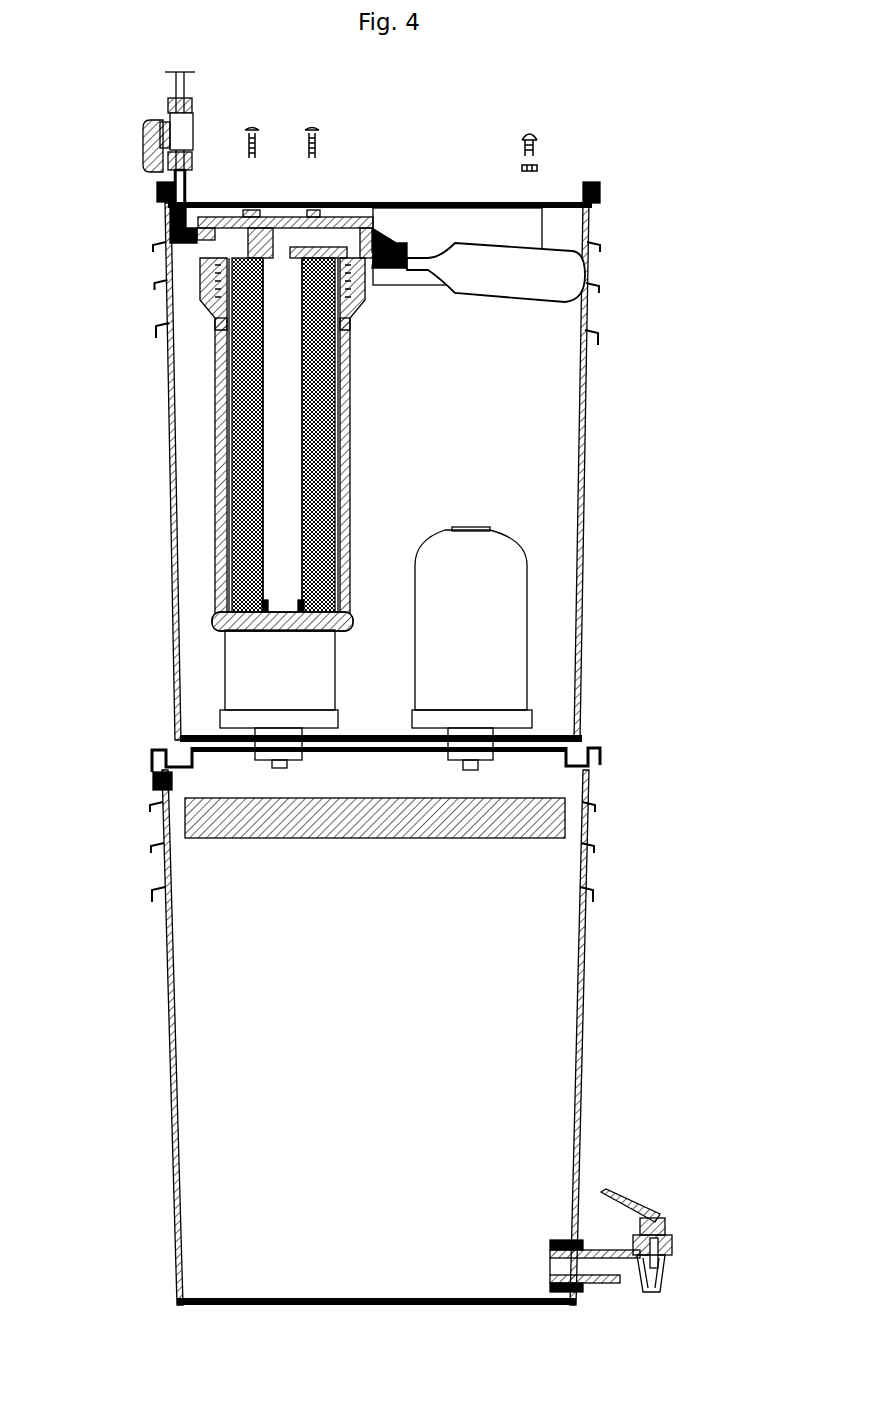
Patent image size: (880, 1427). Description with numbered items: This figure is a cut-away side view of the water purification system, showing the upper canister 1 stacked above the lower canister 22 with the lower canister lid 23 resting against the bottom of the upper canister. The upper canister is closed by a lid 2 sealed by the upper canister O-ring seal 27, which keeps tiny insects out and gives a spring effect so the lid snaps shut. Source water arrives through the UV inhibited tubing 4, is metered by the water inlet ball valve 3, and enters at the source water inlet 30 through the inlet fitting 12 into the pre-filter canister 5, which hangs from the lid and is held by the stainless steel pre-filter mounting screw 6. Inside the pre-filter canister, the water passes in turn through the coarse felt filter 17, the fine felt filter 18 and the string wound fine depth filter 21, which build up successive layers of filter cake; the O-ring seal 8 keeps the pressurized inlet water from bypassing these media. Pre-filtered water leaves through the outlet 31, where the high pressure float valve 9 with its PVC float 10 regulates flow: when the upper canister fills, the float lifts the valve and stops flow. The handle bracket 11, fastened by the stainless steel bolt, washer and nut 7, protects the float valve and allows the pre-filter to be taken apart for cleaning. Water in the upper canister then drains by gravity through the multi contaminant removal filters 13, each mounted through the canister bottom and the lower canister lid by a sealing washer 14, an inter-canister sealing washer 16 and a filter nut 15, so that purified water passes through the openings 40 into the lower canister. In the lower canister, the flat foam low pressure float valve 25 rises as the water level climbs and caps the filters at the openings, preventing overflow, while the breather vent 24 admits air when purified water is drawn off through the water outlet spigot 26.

The upper canister 1 is at (583, 447).
The lid 2 is at (425, 202).
The UV inhibited water inlet ball valve 3 is at (197, 132).
The tubing 4 is at (190, 190).
The pre-filter canister 5 is at (283, 444).
The pre-filter mounting screw 6 is at (258, 128).
The handle bracket bolt, washer, and nut 7 is at (540, 153).
The O-ring seal 8 is at (354, 278).
The high pressure float valve 9 is at (395, 245).
The PVC float 10 is at (515, 300).
The handle bracket 11 is at (532, 240).
The inlet fitting 12 is at (189, 250).
The multi contaminant removal filter 13 is at (268, 670).
The multi contaminant removal filter sealing washer 14 is at (462, 734).
The multi contaminant removal filter nut 15 is at (447, 758).
The inter-canister sealing washer 16 is at (487, 736).
The coarse felt filter 17 is at (365, 384).
The fine felt filter 18 is at (359, 441).
The fine depth filter 21 is at (362, 482).
The lower canister 22 is at (582, 958).
The lower canister lid 23 is at (490, 760).
The breather vent 24 is at (178, 782).
The low pressure float valve 25 is at (328, 838).
The water outlet spigot 26 is at (678, 1240).
The upper canister O-ring seal 27 is at (619, 190).
The source water inlet 30 is at (178, 238).
The outlet 31 is at (360, 233).
The openings 40 is at (462, 778).